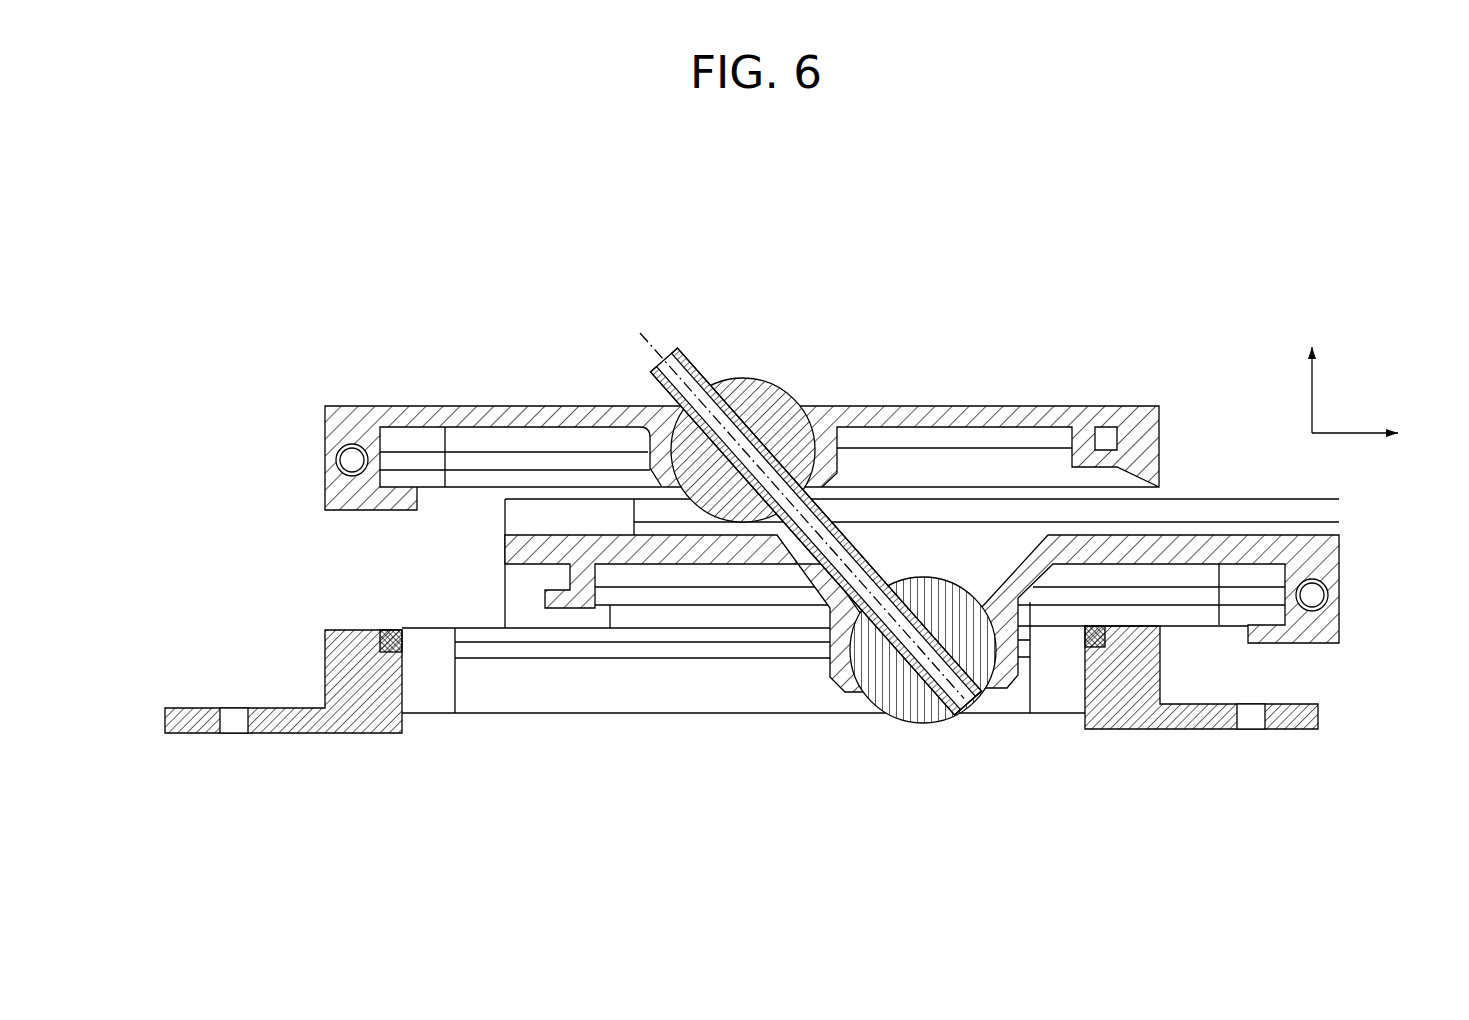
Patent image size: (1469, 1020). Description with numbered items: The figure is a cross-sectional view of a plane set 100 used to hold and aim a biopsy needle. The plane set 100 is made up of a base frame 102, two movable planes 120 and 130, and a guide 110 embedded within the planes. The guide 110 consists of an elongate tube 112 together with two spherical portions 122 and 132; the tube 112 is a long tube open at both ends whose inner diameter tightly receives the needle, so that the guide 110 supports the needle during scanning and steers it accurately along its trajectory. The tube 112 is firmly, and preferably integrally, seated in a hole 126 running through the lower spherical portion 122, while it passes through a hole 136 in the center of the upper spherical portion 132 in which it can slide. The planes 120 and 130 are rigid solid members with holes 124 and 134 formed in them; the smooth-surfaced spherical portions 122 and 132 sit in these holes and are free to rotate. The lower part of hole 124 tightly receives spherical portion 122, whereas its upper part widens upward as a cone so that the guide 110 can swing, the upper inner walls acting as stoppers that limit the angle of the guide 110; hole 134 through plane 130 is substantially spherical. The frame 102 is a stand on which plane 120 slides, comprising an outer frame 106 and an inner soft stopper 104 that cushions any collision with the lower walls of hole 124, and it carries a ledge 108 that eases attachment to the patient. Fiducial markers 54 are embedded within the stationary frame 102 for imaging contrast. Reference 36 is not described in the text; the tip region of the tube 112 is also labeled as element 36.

The optical fiber end 36 is at (977, 708).
The fiducial markers 54 is at (386, 630).
The plane set 100 is at (953, 290).
The base frame 102 is at (337, 767).
The inner soft stopper 104 is at (433, 697).
The outer frame 106 is at (338, 640).
The ledge 108 is at (186, 726).
The guide 110 is at (642, 355).
The elongate tube 112 is at (683, 345).
The movable plane 120 is at (1342, 564).
The spherical portion 122 is at (912, 722).
The hole 124 is at (990, 540).
The hole 126 is at (933, 722).
The movable plane 130 is at (1160, 447).
The spherical portion 132 is at (765, 392).
The hole 134 is at (812, 405).
The hole 136 is at (738, 380).